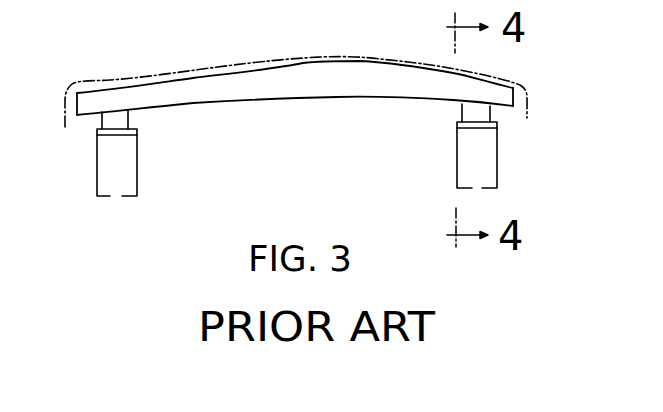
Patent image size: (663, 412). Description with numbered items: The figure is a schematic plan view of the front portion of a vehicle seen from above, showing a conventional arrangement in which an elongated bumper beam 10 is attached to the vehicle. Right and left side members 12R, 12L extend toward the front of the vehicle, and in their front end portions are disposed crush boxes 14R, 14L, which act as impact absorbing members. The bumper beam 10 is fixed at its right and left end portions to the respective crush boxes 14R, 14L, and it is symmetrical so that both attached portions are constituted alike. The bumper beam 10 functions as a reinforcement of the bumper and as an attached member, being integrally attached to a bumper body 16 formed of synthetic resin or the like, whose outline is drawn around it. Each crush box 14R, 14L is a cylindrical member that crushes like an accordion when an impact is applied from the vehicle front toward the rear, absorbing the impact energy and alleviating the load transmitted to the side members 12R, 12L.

The bumper beam 10 is at (293, 88).
The bumper body 16 is at (347, 56).
The left crush box 14L is at (120, 120).
The right crush box 14R is at (468, 112).
The left side member 12L is at (125, 180).
The right side member 12R is at (483, 170).